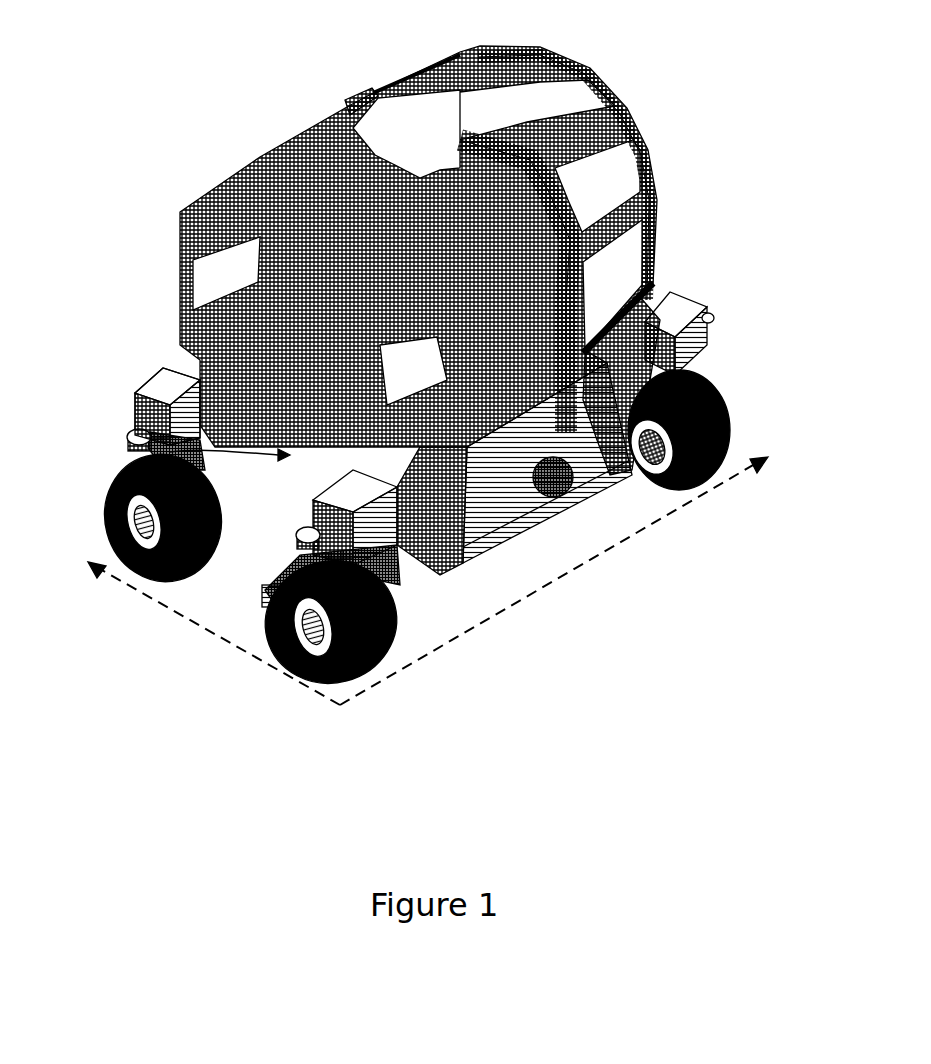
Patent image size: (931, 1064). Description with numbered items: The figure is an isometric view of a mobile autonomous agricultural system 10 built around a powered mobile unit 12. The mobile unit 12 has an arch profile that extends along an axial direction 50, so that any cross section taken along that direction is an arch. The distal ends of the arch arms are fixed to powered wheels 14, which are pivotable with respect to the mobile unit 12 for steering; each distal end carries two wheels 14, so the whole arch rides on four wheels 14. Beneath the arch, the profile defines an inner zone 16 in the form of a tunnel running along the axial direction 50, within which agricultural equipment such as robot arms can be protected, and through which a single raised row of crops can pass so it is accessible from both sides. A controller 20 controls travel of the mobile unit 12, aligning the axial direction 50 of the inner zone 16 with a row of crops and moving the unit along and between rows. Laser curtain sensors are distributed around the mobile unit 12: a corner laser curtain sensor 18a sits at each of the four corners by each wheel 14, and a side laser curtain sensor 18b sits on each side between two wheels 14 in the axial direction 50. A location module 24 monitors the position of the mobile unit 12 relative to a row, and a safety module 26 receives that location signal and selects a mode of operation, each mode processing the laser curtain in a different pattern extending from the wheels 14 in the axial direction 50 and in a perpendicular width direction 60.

The mobile autonomous agricultural system 10 is at (164, 21).
The powered mobile unit 12 is at (587, 82).
The powered wheels 14 is at (106, 512).
The inner zone 16 is at (120, 432).
The corner laser curtain sensor 18a is at (126, 438).
The side laser curtain sensor 18b is at (572, 498).
The controller 20 is at (335, 410).
The location module 24 is at (578, 278).
The safety module 26 is at (353, 107).
The axial direction 50 is at (604, 572).
The width direction 60 is at (187, 624).